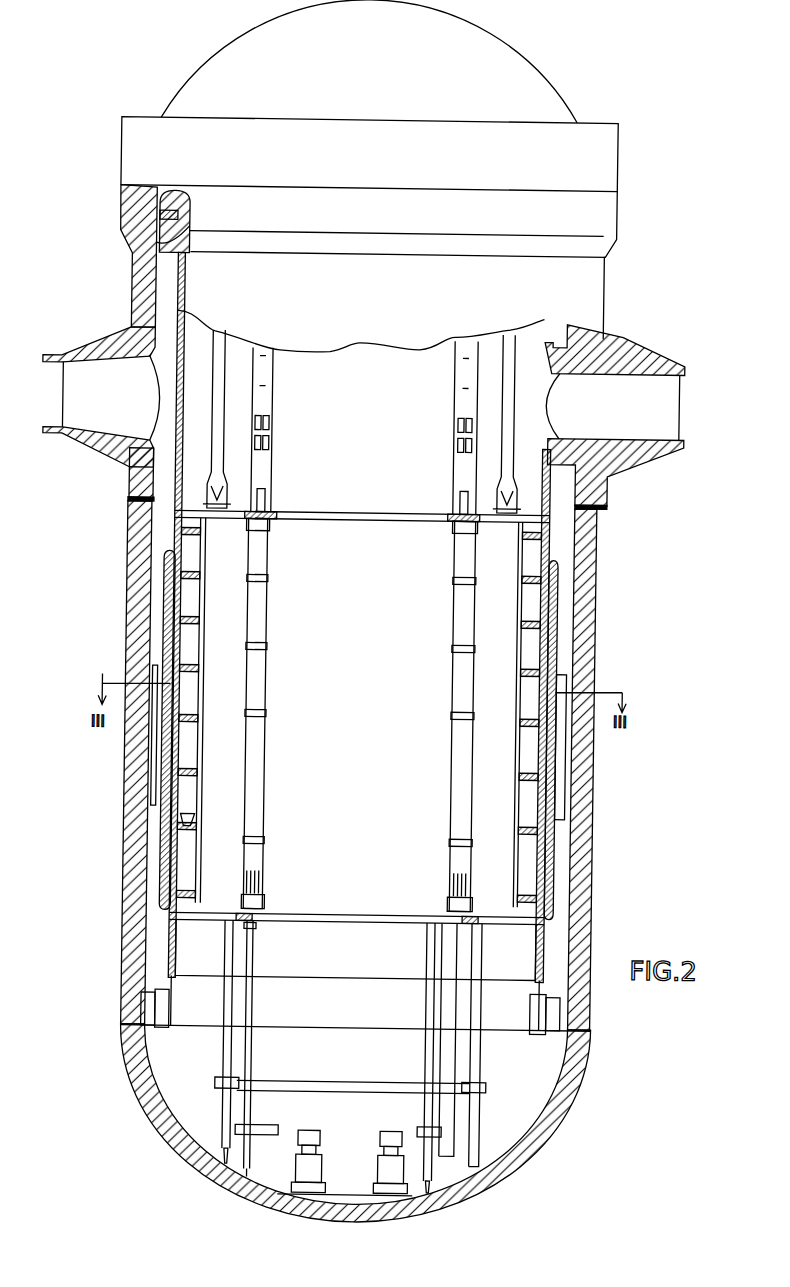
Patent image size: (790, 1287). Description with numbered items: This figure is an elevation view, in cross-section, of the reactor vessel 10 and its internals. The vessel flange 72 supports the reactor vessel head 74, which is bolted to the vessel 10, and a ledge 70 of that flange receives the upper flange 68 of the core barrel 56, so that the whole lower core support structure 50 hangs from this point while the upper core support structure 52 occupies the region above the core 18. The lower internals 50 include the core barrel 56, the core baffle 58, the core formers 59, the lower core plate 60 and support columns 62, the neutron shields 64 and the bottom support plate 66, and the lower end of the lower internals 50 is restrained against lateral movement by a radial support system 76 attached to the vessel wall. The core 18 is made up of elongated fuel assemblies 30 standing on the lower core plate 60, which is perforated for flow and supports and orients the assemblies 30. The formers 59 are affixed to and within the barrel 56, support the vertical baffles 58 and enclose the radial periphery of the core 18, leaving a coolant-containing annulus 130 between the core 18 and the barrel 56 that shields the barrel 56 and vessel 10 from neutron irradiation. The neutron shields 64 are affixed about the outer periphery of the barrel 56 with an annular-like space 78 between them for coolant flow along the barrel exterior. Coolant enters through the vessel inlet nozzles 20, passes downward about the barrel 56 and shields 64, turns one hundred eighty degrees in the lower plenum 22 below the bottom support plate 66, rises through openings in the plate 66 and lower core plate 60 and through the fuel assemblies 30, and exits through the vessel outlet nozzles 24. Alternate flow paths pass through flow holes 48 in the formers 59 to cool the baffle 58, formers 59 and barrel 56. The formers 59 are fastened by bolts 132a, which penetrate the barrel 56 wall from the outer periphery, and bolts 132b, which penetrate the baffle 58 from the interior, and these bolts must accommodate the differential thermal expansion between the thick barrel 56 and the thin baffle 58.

The reactor vessel 10 is at (591, 589).
The core 18 is at (362, 725).
The vessel inlet nozzles 20 is at (85, 347).
The lower plenum 22 is at (378, 1071).
The vessel outlet nozzles 24 is at (642, 346).
The fuel assemblies 30 is at (264, 605).
The flow holes 48 is at (190, 824).
The lower core support structure 50 is at (509, 616).
The upper core support structure 52 is at (439, 439).
The core barrel 56 is at (172, 460).
The core baffle 58 is at (205, 629).
The core formers 59 is at (206, 570).
The lower core plate 60 is at (331, 914).
The support columns 62 is at (256, 954).
The neutron shields 64 is at (164, 578).
The bottom support plate 66 is at (356, 991).
The upper flange 68 is at (124, 253).
The ledge 70 is at (120, 240).
The reactor vessel flange 72 is at (129, 198).
The reactor vessel head 74 is at (131, 145).
The radial support system 76 is at (153, 1010).
The annular-like space 78 is at (552, 642).
The annulus 130 is at (530, 648).
The bolts 132a is at (539, 833).
The bolts 132b is at (514, 836).